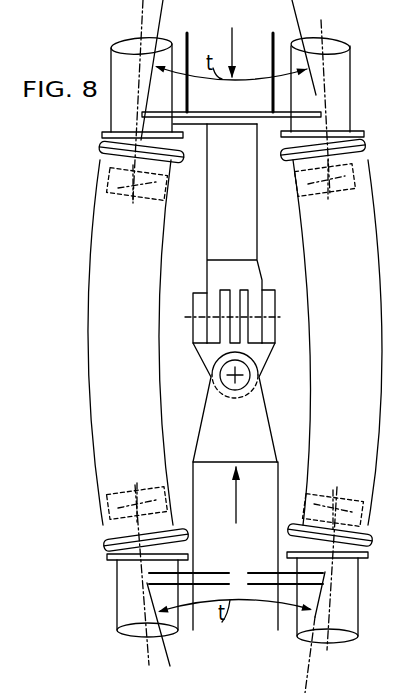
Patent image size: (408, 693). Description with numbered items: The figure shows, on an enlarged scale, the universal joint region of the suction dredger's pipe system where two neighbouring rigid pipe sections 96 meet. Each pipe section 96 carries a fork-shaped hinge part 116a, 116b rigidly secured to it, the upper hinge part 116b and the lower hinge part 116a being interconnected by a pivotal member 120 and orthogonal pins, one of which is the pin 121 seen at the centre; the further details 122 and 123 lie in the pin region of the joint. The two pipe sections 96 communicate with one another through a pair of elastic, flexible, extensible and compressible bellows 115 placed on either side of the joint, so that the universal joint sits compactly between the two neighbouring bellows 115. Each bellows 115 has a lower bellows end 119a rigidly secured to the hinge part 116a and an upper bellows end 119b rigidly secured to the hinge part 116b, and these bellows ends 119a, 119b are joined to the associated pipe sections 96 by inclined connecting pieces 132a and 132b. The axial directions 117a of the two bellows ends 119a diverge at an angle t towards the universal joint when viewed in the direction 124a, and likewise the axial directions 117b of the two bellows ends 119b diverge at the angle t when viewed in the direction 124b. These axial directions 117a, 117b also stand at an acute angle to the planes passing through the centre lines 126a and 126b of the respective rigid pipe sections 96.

The rigid pipe section 96 is at (122, 58).
The bellows 115 is at (140, 347).
The fork-shaped hinge part 116a is at (262, 467).
The fork-shaped hinge part 116b is at (241, 258).
The axial direction 117a is at (297, 637).
The axial direction 117b is at (164, 10).
The bellows end 119a is at (288, 531).
The bellows end 119b is at (360, 148).
The pivotal member 120 is at (201, 292).
The pin 121 is at (241, 389).
The slotted comb 122 is at (193, 317).
The pivot pin 123 is at (232, 378).
The viewing direction 124a is at (237, 506).
The viewing direction 124b is at (236, 43).
The centre line 126a is at (143, 606).
The centre line 126b is at (136, 12).
The inclined connecting piece 132a is at (290, 555).
The inclined connecting piece 132b is at (247, 153).